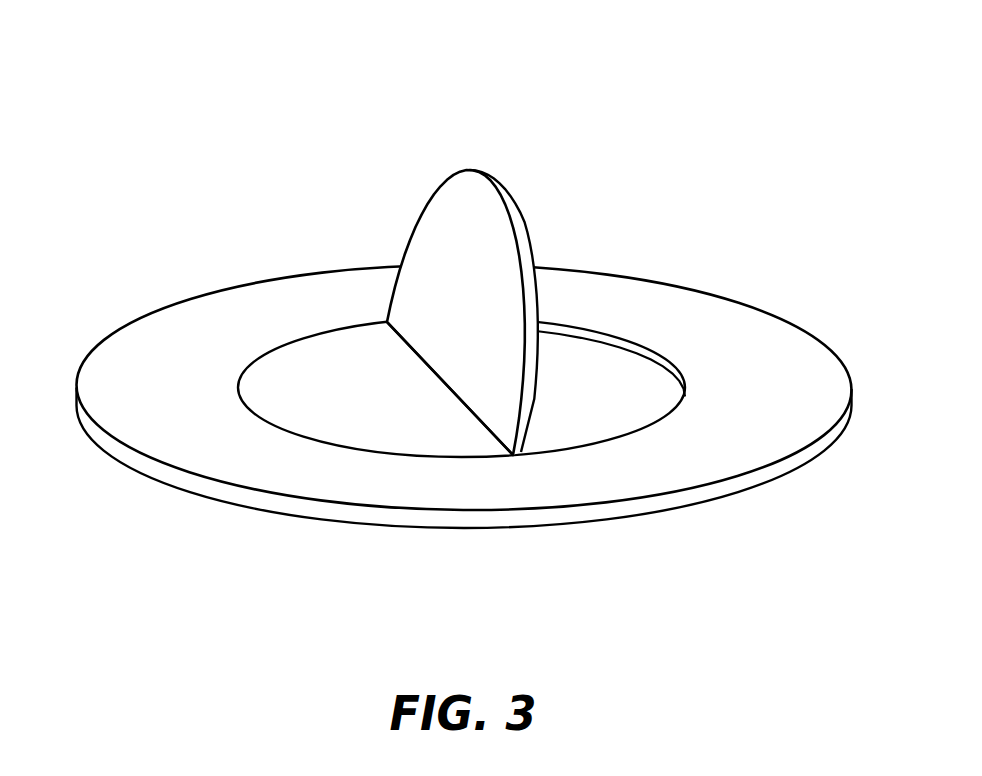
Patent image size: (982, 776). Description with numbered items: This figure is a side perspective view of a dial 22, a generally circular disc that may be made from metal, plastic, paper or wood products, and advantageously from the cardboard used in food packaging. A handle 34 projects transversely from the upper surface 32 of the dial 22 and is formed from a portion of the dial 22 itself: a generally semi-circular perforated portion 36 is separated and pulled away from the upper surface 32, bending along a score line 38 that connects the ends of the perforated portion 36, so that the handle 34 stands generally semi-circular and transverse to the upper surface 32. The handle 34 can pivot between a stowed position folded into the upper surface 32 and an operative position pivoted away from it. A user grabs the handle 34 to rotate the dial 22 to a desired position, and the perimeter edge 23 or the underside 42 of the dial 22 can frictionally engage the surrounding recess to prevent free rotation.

The dial 22 is at (783, 338).
The perimeter edge 23 is at (97, 433).
The upper surface 32 is at (830, 388).
The handle 34 is at (475, 327).
The semi-circular perforated portion 36 is at (437, 232).
The score line 38 is at (470, 413).
The underside 42 is at (726, 505).